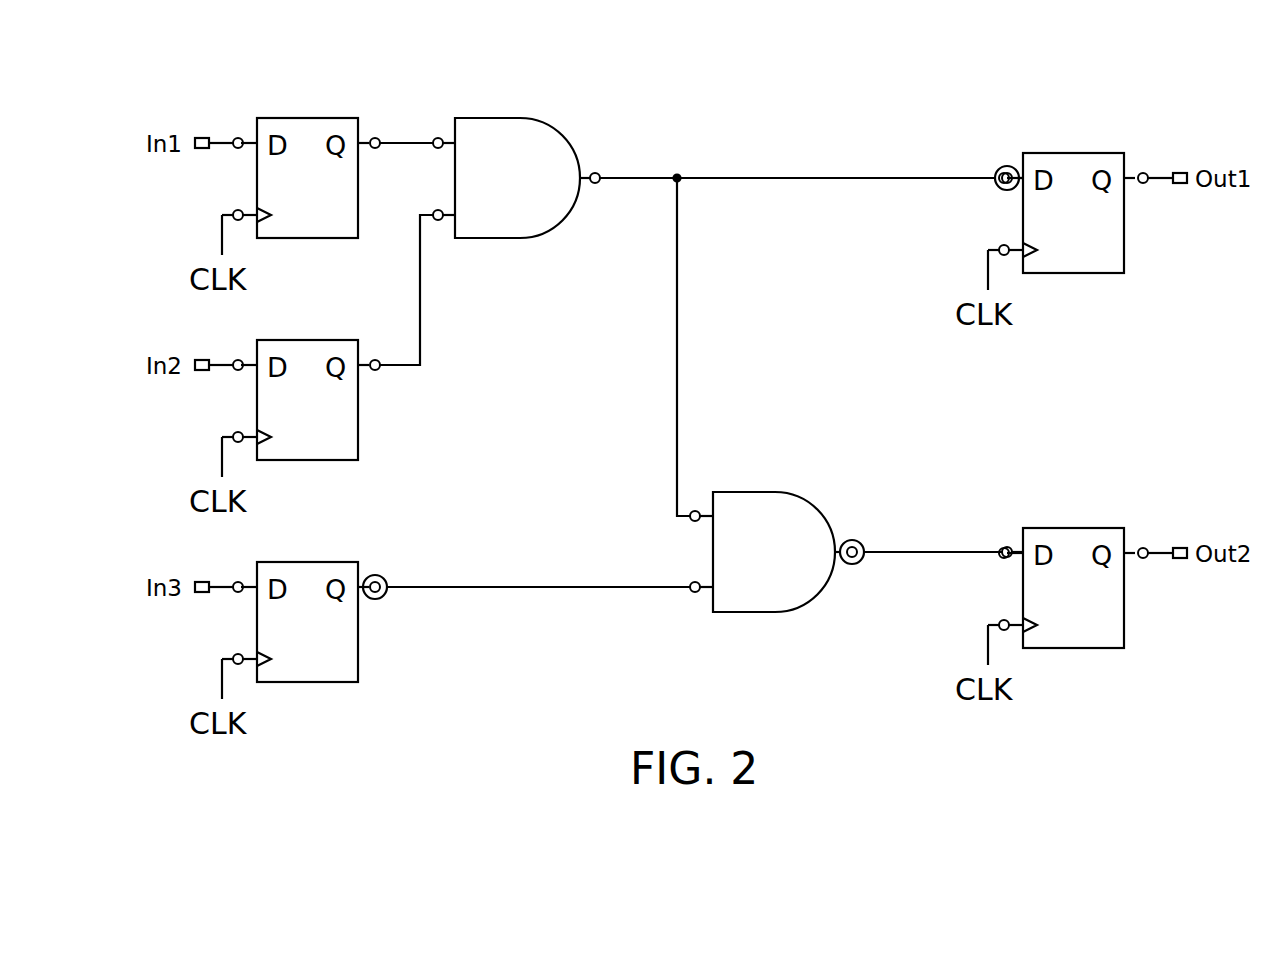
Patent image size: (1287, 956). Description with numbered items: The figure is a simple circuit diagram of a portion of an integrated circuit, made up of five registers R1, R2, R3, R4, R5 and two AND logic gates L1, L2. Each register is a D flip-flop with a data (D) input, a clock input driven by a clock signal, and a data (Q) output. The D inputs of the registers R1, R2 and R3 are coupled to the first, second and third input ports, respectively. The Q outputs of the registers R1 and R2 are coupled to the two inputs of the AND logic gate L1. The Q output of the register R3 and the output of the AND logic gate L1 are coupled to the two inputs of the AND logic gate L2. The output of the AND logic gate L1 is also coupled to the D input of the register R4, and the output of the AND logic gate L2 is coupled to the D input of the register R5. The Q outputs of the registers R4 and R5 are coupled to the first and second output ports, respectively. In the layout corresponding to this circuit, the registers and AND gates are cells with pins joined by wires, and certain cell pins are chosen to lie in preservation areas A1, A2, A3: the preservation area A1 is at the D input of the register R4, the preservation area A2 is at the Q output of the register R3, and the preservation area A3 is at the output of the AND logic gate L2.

The register R1 is at (307, 118).
The register R2 is at (307, 340).
The register R3 is at (307, 562).
The register R4 is at (1075, 153).
The register R5 is at (1075, 528).
The AND logic gate L1 is at (486, 118).
The AND logic gate L2 is at (743, 492).
The preservation area A1 is at (1005, 167).
The preservation area A2 is at (378, 601).
The preservation area A3 is at (856, 565).